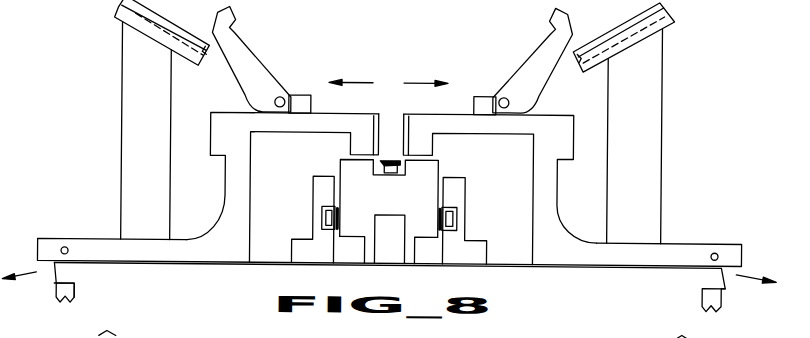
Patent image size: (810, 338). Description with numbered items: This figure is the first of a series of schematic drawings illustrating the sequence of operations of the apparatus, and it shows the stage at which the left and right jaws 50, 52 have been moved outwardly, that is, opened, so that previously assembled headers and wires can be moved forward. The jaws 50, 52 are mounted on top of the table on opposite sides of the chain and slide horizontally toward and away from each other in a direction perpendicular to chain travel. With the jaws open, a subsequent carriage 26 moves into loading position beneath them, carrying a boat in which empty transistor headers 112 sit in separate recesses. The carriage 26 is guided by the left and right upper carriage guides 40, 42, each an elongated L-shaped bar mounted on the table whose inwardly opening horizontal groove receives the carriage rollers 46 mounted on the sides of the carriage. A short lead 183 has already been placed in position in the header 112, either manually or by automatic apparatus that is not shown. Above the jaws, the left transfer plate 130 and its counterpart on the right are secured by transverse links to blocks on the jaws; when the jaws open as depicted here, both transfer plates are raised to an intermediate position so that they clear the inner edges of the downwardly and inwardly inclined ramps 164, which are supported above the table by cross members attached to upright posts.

The carriage 26 is at (440, 165).
The left upper carriage guide 40 is at (317, 177).
The right upper carriage guide 42 is at (458, 178).
The carriage roller 46 is at (320, 212).
The left jaw 50 is at (342, 116).
The right jaw 52 is at (415, 117).
The transistor header 112 is at (400, 168).
The left transfer plate 130 is at (246, 41).
The ramp 164 is at (181, 68).
The short lead 183 is at (388, 175).